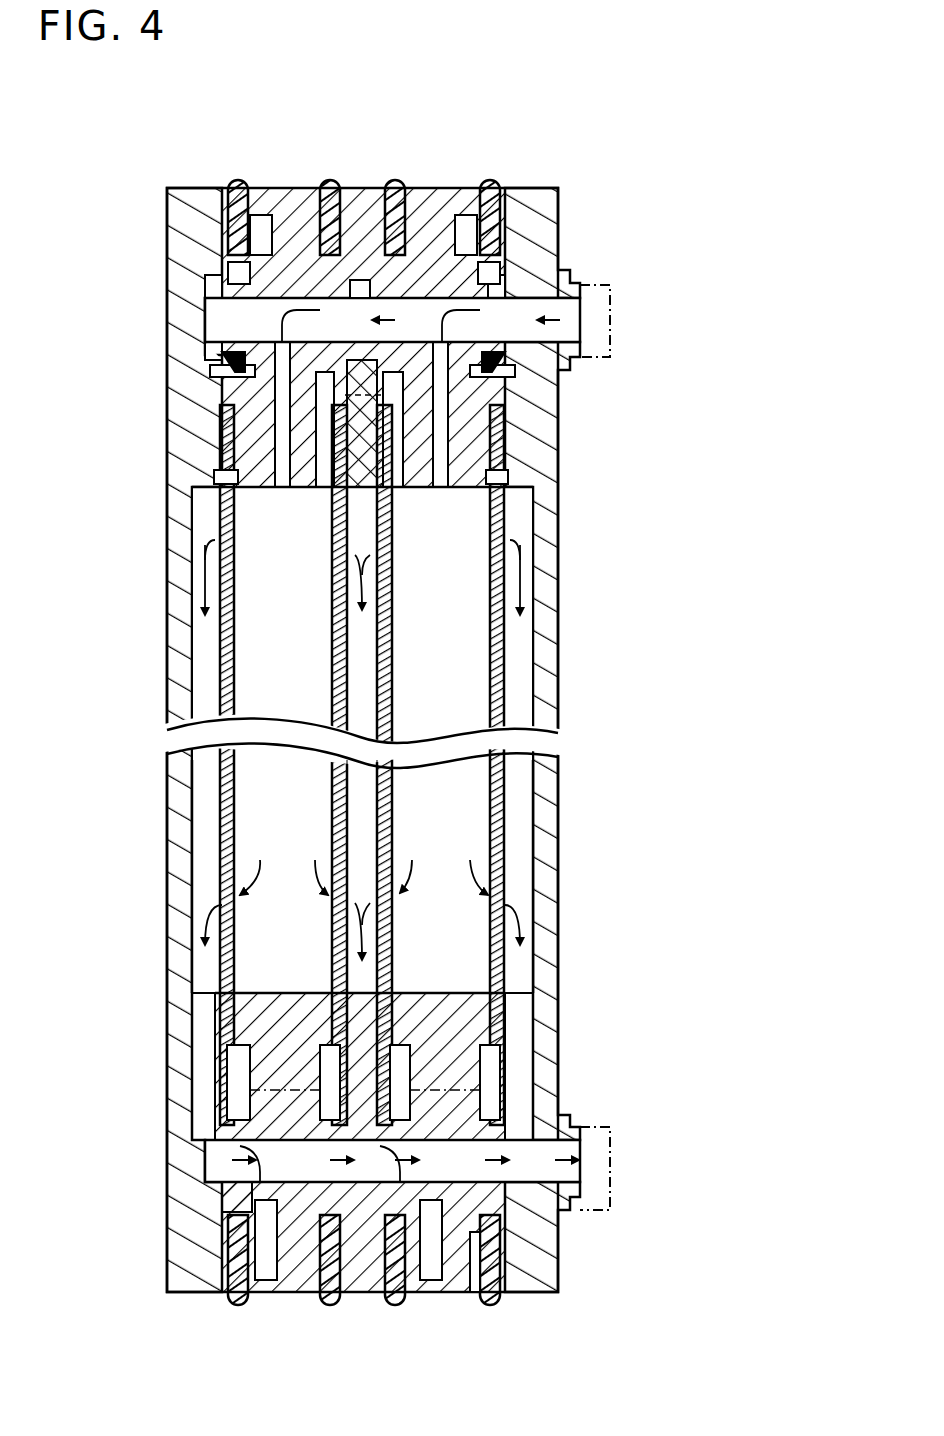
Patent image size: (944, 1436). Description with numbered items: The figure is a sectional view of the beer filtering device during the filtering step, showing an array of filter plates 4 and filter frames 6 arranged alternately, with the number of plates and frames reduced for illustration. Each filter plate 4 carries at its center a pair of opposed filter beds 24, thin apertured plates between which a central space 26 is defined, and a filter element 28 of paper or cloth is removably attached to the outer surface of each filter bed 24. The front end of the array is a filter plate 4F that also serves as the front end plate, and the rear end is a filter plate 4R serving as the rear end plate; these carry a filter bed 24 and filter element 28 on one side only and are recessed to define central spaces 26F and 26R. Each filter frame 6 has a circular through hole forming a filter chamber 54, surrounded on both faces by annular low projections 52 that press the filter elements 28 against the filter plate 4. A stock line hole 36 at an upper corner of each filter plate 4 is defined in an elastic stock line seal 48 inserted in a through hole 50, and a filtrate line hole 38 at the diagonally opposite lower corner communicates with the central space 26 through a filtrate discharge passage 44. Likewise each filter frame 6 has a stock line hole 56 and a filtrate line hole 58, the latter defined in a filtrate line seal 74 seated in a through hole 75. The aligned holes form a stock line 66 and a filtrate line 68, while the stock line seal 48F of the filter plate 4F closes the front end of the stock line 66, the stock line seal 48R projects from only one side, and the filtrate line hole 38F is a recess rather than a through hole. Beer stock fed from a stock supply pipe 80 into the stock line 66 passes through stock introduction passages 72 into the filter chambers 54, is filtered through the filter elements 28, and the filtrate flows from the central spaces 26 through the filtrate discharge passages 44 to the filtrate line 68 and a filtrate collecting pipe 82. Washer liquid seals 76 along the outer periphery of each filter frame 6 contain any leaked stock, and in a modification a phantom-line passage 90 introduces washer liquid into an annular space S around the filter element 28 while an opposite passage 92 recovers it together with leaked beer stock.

The filter plate 4 is at (362, 702).
The front end filter plate 4F is at (164, 702).
The rear end filter plate 4R is at (571, 725).
The filter frame 6 is at (358, 199).
The filter bed 24 is at (362, 765).
The central space 26 is at (403, 876).
The central space of front end filter plate 26F is at (142, 870).
The central space of rear end filter plate 26R is at (585, 876).
The filter element 28 is at (360, 574).
The stock line hole 36 is at (419, 280).
The filtrate line hole 38 is at (419, 1173).
The filtrate line hole of front end filter plate 38F is at (167, 1235).
The filtrate discharge passage 44 is at (372, 1019).
The stock line seal 48 is at (361, 300).
The stock line seal of front end filter plate 48F is at (147, 294).
The stock line seal of rear end filter plate 48R is at (531, 211).
The through hole 50 is at (355, 150).
The annular low projection 52 is at (400, 449).
The filter chamber 54 is at (370, 750).
The stock line hole 56 is at (362, 228).
The filtrate line hole 58 is at (363, 1278).
The stock line 66 is at (429, 288).
The filtrate line 68 is at (338, 1174).
The stock introduction passage 72 is at (355, 405).
The filtrate line seal 74 is at (376, 1286).
The through hole 75 is at (494, 1313).
The washer liquid seal 76 is at (352, 149).
The stock supply pipe 80 is at (627, 369).
The filtrate collecting pipe 82 is at (629, 1198).
The passage 90 is at (283, 281).
The passage 92 is at (365, 1148).
The annular space S is at (472, 427).